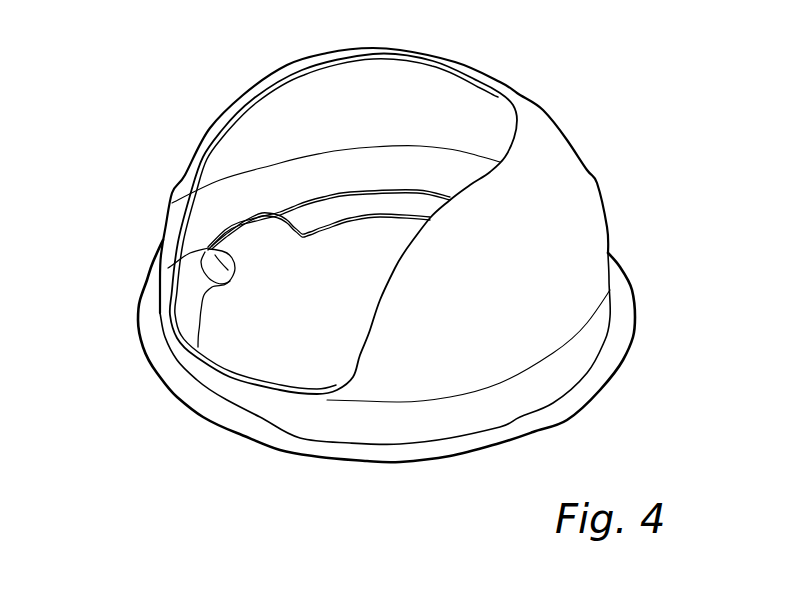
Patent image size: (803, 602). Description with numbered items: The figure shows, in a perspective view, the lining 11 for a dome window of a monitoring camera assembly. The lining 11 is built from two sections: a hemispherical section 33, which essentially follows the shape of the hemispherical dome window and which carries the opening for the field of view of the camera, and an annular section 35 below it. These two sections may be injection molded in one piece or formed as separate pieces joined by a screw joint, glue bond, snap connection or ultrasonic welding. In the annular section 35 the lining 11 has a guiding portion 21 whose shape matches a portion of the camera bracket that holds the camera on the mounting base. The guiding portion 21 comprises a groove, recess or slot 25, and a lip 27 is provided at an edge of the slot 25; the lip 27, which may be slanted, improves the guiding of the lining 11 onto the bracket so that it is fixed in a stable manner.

The lining 11 is at (545, 115).
The guiding portion 21 is at (210, 247).
The slot 25 is at (250, 222).
The lip 27 is at (270, 245).
The hemispherical section 33 is at (592, 182).
The annular section 35 is at (183, 297).